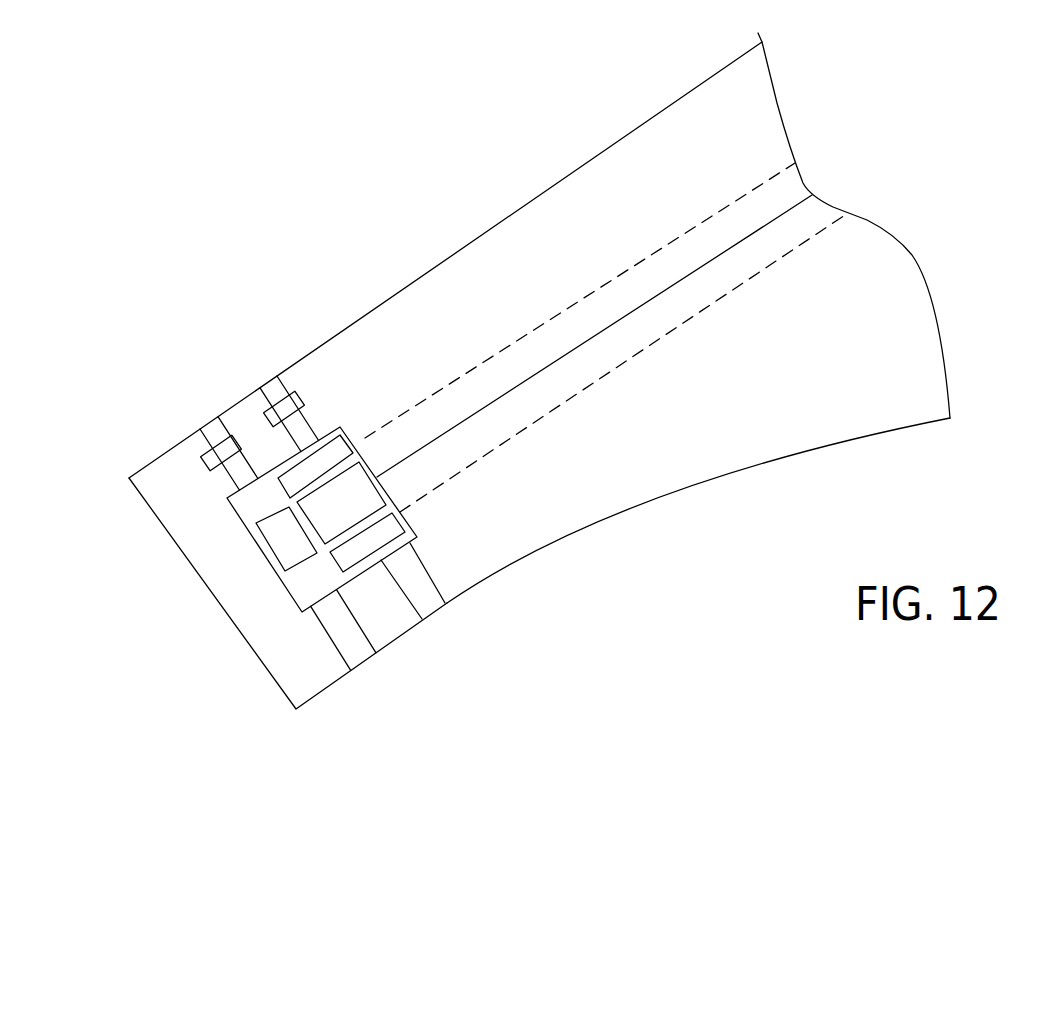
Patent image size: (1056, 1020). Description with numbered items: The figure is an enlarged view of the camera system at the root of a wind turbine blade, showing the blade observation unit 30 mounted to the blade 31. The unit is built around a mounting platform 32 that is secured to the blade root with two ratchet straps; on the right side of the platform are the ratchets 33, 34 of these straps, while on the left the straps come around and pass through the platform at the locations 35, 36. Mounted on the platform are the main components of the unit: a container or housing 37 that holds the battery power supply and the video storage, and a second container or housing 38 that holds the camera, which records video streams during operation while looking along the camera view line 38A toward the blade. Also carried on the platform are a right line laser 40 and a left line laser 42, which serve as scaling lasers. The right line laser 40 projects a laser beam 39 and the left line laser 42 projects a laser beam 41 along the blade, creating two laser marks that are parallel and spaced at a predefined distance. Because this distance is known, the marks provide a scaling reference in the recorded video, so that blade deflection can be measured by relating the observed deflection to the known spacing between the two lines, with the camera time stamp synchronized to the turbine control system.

The blade observation unit 30 is at (363, 417).
The blade 31 is at (128, 479).
The mounting platform 32 is at (257, 507).
The ratchet 33 is at (268, 398).
The ratchet 34 is at (214, 441).
The strap passage 35 is at (435, 607).
The strap passage 36 is at (355, 650).
The container/housing with battery power supply and video storage 37 is at (288, 548).
The container/housing with camera 38 is at (366, 491).
The camera view line 38A is at (638, 308).
The laser beam 39 is at (567, 310).
The right line laser 40 is at (340, 447).
The laser beam 41 is at (713, 304).
The left line laser 42 is at (395, 530).